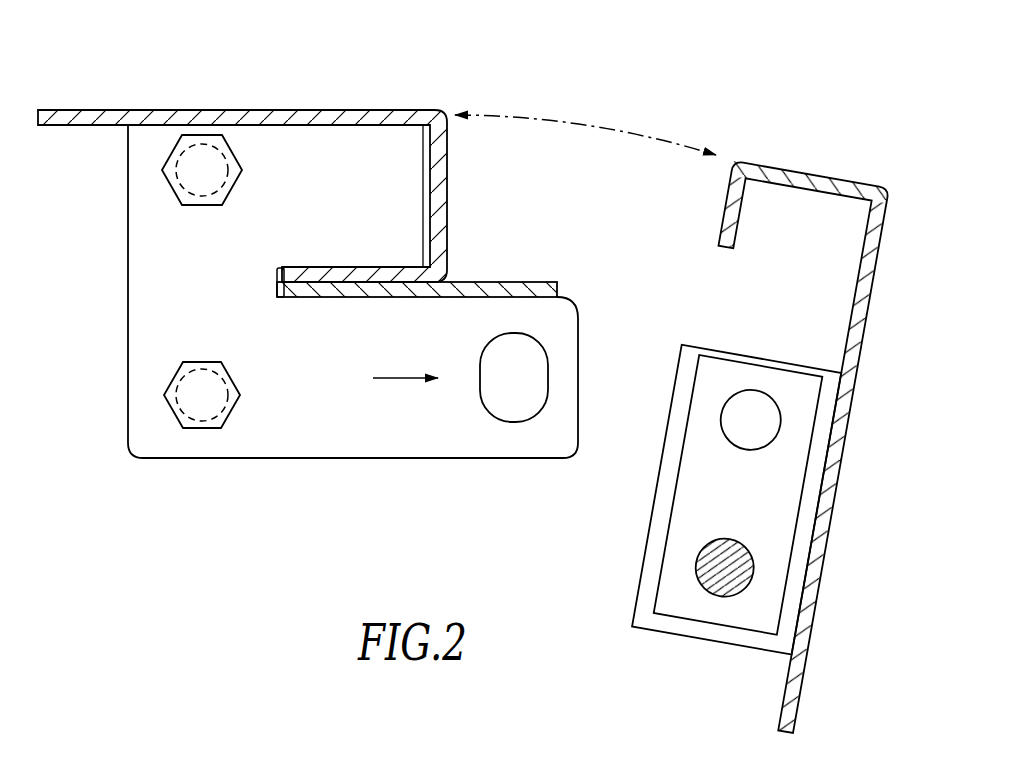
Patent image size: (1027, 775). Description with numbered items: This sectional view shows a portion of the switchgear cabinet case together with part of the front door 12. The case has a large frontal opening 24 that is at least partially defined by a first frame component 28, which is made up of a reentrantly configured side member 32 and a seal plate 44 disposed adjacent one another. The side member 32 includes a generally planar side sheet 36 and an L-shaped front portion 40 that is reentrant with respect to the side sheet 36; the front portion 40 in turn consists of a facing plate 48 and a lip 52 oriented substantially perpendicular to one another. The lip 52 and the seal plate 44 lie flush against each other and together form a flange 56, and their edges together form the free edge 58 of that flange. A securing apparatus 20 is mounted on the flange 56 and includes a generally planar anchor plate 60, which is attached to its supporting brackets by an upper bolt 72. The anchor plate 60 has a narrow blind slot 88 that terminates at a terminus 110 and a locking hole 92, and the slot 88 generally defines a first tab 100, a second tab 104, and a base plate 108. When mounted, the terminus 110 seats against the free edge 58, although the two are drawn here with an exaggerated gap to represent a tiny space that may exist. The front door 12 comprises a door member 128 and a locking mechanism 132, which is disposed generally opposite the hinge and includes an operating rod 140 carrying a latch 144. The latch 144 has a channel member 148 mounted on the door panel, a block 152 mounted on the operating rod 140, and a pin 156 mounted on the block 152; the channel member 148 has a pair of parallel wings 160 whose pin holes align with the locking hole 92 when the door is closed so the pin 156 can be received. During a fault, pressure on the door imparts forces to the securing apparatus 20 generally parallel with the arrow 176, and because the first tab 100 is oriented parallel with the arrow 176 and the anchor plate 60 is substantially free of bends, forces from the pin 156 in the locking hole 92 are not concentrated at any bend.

The front door 12 is at (850, 150).
The securing apparatus 20 is at (240, 478).
The frontal opening 24 is at (514, 552).
The first frame component 28 is at (463, 264).
The side member 32 is at (375, 98).
The side sheet 36 is at (282, 108).
The front portion 40 is at (459, 153).
The seal plate 44 is at (521, 280).
The facing plate 48 is at (449, 178).
The lip 52 is at (322, 268).
The flange 56 is at (287, 258).
The free edge 58 is at (276, 285).
The anchor plate 60 is at (117, 312).
The upper bolt 72 is at (238, 150).
The slot 88 is at (331, 289).
The locking hole 92 is at (540, 347).
The first tab 100 is at (579, 321).
The second tab 104 is at (448, 150).
The base plate 108 is at (128, 178).
The terminus 110 is at (285, 298).
The door member 128 is at (779, 147).
The locking mechanism 132 is at (689, 543).
The operating rod 140 is at (724, 567).
The latch 144 is at (736, 500).
The channel member 148 is at (738, 495).
The block 152 is at (691, 362).
The pin 156 is at (751, 420).
The wings 160 is at (655, 622).
The arrow 176 is at (408, 377).